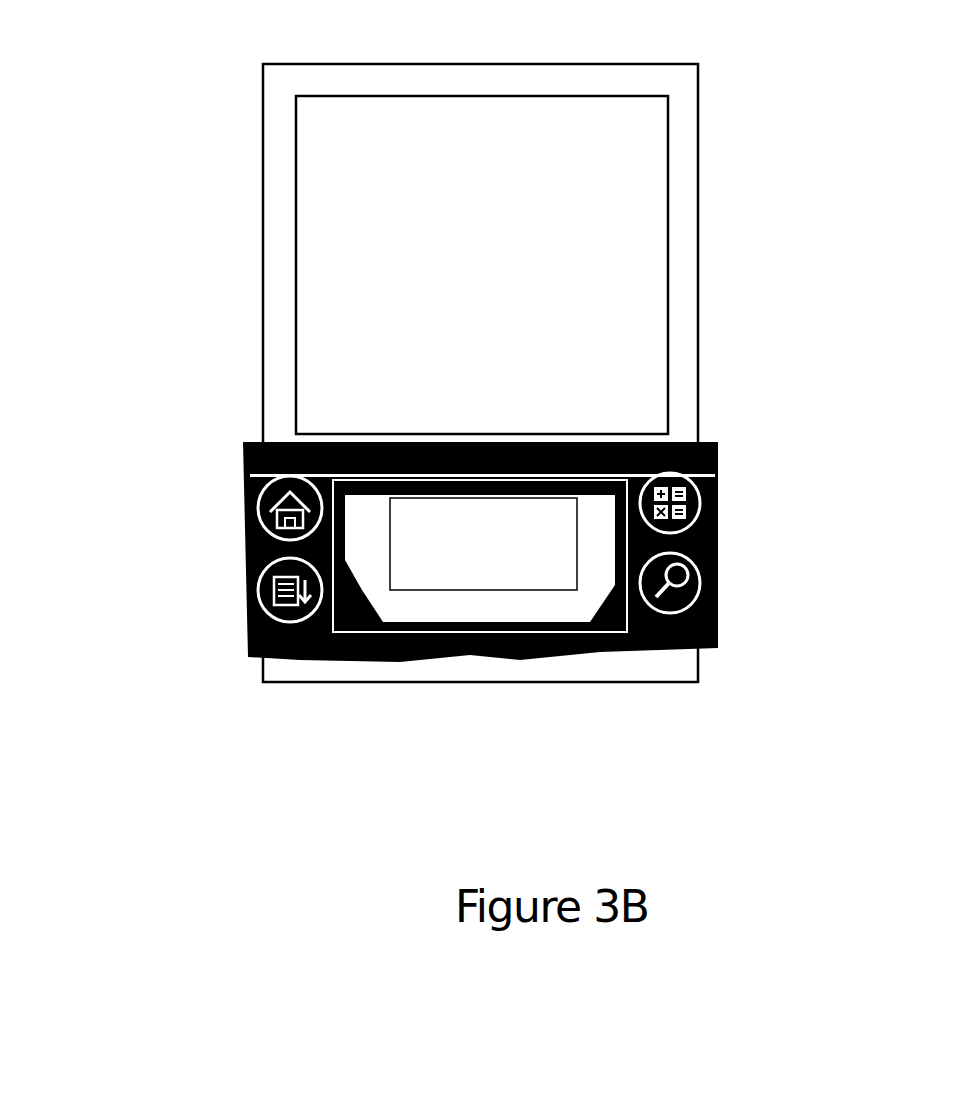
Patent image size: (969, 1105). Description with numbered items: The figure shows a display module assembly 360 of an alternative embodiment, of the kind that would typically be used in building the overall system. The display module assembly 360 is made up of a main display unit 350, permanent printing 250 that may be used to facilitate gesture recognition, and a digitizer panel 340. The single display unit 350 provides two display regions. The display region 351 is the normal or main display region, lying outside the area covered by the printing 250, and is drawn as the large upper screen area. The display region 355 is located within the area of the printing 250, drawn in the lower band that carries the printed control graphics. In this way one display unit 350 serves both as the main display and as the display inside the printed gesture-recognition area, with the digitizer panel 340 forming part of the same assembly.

The display module assembly 360 is at (125, 60).
The digitizer panel 340 is at (698, 272).
The display region 351 is at (608, 212).
The main display unit 350 is at (550, 320).
The display region 355 is at (447, 515).
The permanent printing 250 is at (478, 587).